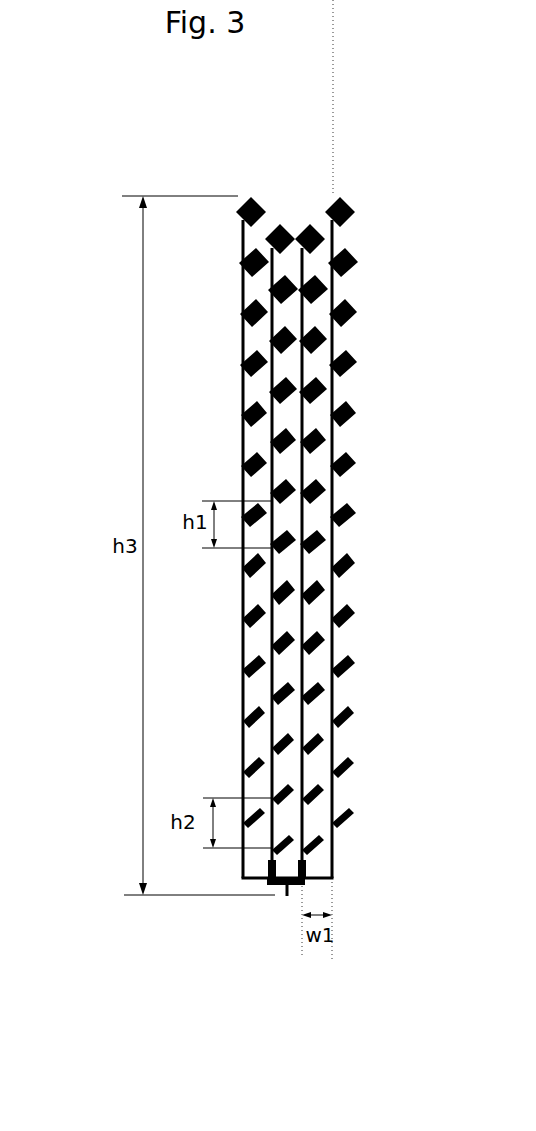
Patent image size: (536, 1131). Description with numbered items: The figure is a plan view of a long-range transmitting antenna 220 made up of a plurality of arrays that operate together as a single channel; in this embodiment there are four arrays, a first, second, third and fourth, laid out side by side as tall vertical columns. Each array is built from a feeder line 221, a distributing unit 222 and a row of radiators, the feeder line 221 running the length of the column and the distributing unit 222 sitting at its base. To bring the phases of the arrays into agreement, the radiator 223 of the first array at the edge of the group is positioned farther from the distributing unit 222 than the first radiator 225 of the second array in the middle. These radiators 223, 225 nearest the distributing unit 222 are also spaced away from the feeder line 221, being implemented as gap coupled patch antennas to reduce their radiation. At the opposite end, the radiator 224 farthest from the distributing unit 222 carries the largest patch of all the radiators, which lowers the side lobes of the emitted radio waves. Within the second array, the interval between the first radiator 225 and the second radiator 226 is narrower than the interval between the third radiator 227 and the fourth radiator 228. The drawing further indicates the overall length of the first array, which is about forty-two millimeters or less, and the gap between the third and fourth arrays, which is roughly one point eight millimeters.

The long-range transmitting antenna 220 is at (95, 113).
The feeder line 221 is at (243, 862).
The distributing unit 222 is at (277, 887).
The radiator 223 is at (257, 808).
The radiator 224 is at (254, 205).
The first radiator 225 is at (289, 845).
The second radiator 226 is at (288, 795).
The third radiator 227 is at (286, 545).
The fourth radiator 228 is at (285, 492).